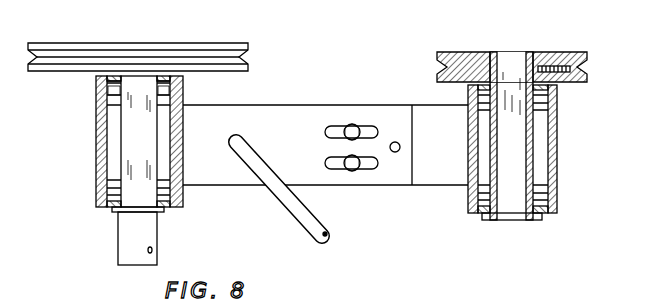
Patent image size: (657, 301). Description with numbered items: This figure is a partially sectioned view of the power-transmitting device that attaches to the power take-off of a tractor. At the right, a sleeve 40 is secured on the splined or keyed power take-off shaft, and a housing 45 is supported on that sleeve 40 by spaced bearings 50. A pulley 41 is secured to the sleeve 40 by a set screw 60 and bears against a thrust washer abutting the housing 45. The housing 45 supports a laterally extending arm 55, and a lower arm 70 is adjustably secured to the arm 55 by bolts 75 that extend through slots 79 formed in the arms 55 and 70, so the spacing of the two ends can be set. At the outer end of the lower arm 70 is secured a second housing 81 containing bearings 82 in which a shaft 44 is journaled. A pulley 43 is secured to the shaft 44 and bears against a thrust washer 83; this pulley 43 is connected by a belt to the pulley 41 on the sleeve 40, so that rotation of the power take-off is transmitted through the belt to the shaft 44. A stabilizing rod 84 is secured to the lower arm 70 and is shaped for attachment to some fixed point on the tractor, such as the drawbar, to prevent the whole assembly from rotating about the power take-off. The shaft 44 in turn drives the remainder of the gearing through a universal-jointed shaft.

The sleeve 40 is at (524, 217).
The pulley 41 is at (486, 50).
The pulley 43 is at (132, 47).
The shaft 44 is at (118, 221).
The housing 45 is at (558, 145).
The bearings 50 is at (538, 162).
The arm 55 is at (430, 113).
The set screw 60 is at (590, 68).
The lower arm 70 is at (303, 88).
The bolts 75 is at (362, 126).
The slots 79 is at (336, 124).
The housing 81 is at (95, 156).
The bearings 82 is at (108, 158).
The thrust washer 83 is at (96, 79).
The stabilizing rod 84 is at (313, 204).